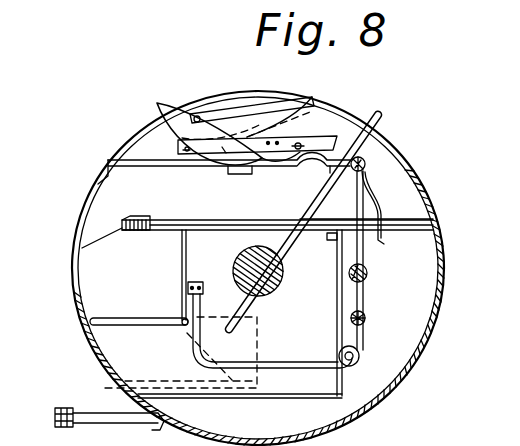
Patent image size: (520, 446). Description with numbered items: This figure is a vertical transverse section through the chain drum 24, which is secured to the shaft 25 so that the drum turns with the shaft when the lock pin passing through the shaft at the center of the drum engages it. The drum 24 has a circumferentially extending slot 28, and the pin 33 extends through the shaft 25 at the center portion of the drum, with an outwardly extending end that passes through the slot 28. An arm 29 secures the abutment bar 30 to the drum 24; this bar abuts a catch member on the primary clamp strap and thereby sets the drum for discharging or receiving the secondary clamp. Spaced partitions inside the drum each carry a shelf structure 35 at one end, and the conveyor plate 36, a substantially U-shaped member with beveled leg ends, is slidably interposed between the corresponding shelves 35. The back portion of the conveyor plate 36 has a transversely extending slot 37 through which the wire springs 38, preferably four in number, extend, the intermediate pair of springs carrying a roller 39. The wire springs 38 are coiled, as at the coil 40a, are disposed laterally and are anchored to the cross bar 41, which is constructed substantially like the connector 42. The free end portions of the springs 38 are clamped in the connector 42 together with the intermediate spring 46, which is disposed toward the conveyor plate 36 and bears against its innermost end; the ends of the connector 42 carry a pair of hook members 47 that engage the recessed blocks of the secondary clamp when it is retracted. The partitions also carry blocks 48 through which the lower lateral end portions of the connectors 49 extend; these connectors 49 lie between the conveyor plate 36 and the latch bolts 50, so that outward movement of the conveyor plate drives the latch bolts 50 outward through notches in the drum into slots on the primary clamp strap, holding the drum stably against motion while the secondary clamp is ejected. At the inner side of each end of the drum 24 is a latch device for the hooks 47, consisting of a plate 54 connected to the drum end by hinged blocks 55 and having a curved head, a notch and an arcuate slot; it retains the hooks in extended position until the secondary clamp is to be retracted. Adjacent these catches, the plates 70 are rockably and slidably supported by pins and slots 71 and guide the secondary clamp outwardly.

The chain drum 24 is at (415, 176).
The shaft 25 is at (284, 272).
The circumferentially extending slot 28 is at (305, 123).
The arm 29 is at (123, 419).
The abutment bar 30 is at (62, 407).
The pin 33 is at (314, 206).
The shelf structure 35 is at (180, 222).
The conveyor plate 36 is at (211, 229).
The transversely extending slot 37 is at (336, 236).
The wire springs 38 is at (290, 366).
The roller 39 is at (368, 273).
The coil 40a is at (360, 356).
The cross bar 41 is at (188, 282).
The connector 42 is at (367, 163).
The intermediate spring 46 is at (375, 212).
The hook members 47 is at (155, 167).
The blocks 48 is at (147, 310).
The connectors 49 is at (186, 264).
The latch bolts 50 is at (113, 392).
The plate 54 is at (172, 139).
The hinged blocks 55 is at (302, 146).
The plates 70 is at (252, 112).
The pins and slots 71 is at (198, 116).